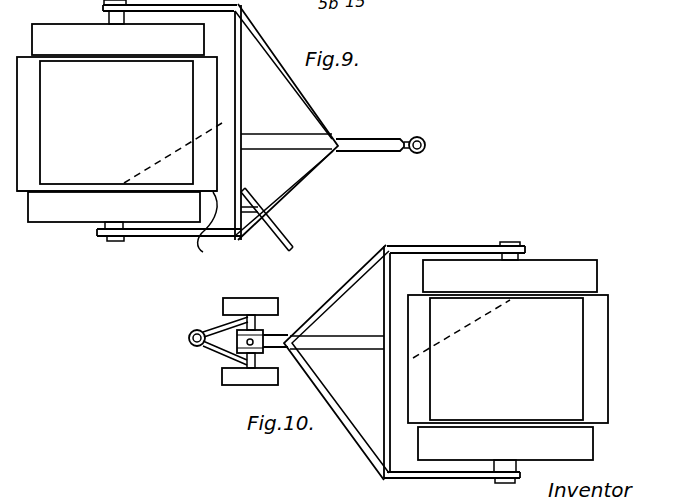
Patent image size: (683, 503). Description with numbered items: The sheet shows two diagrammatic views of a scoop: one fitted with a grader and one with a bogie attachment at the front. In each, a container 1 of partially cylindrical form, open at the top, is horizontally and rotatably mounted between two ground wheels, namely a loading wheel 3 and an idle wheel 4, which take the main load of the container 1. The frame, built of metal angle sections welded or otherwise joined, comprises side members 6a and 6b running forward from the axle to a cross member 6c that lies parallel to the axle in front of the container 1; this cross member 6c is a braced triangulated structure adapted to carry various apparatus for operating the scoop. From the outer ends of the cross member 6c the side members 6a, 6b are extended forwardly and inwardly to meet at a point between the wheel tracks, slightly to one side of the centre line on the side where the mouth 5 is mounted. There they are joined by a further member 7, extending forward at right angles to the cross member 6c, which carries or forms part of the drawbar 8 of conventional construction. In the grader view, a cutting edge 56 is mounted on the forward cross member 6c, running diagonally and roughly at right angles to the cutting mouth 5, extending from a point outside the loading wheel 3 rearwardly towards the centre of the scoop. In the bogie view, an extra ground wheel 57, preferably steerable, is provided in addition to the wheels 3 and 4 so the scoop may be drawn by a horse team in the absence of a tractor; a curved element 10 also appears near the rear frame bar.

In FIG. 9, the container 1 is at (194, 99).
In FIG. 9, the loading wheel 3 is at (68, 208).
In FIG. 9, the idle wheel 4 is at (205, 44).
In FIG. 9, the mouth 5 is at (150, 165).
In FIG. 10, the mouth 5 is at (463, 330).
In FIG. 9, the side member 6a is at (150, 237).
In FIG. 10, the side member 6a is at (444, 247).
In FIG. 9, the side member 6b is at (184, 12).
In FIG. 10, the side member 6b is at (420, 481).
In FIG. 9, the cross member 6c is at (240, 121).
In FIG. 10, the cross member 6c is at (385, 315).
In FIG. 9, the further member 7 is at (354, 136).
In FIG. 9, the drawbar 8 is at (421, 142).
In FIG. 9, the spring 10 is at (214, 227).
In FIG. 9, the cutting edge 56 is at (273, 234).
In FIG. 10, the extra ground wheel 57 is at (222, 378).